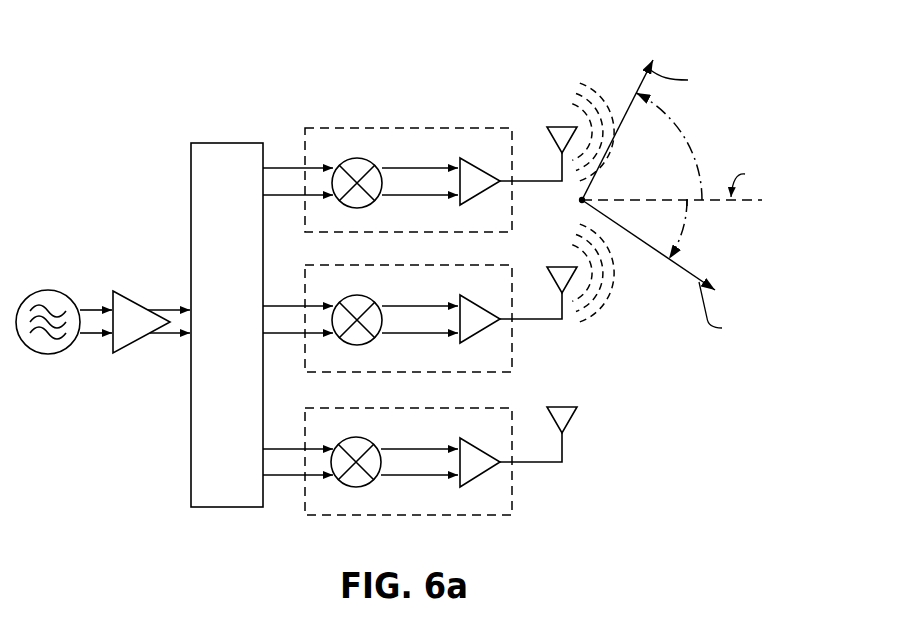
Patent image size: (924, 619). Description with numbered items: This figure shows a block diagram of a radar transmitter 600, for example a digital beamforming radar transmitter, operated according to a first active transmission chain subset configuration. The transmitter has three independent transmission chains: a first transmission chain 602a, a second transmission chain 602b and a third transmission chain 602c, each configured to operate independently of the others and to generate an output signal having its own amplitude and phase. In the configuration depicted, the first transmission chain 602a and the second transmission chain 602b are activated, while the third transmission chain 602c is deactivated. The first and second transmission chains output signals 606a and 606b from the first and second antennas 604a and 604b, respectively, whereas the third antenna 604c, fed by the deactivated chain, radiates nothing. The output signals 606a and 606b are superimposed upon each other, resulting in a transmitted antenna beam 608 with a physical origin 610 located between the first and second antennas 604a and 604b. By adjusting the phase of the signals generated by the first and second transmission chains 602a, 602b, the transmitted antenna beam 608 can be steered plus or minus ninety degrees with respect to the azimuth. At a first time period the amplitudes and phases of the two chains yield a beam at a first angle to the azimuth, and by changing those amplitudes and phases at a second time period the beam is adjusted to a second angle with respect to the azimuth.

The radar transmitter 600 is at (100, 72).
The first transmission chain 602a is at (338, 128).
The second transmission chain 602b is at (338, 265).
The third transmission chain 602c is at (338, 408).
The first antenna 604a is at (547, 127).
The second antenna 604b is at (547, 267).
The third antenna 604c is at (547, 407).
The output signal 606a is at (585, 100).
The output signal 606b is at (585, 241).
The transmitted antenna beam 608 is at (644, 78).
The physical origin 610 is at (588, 197).